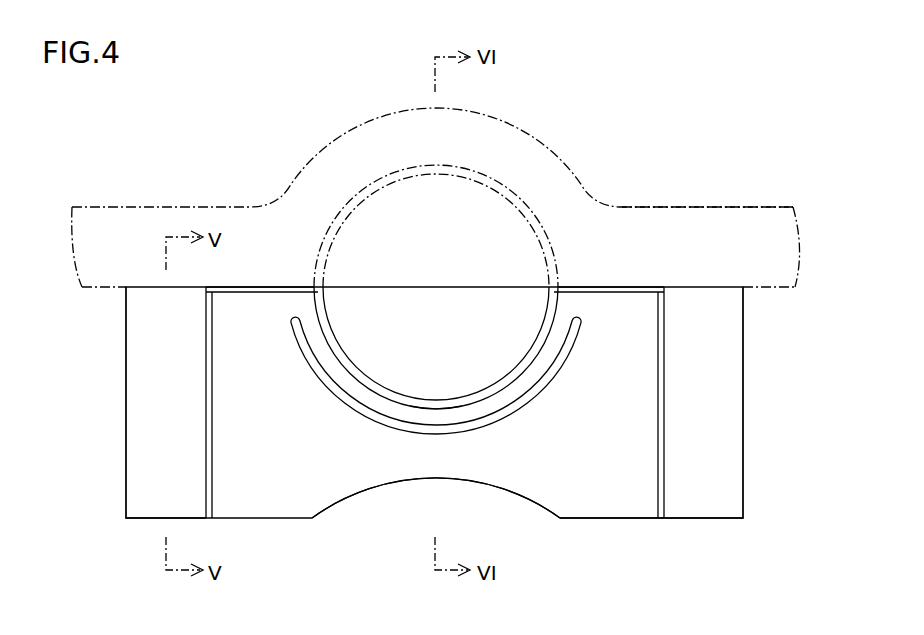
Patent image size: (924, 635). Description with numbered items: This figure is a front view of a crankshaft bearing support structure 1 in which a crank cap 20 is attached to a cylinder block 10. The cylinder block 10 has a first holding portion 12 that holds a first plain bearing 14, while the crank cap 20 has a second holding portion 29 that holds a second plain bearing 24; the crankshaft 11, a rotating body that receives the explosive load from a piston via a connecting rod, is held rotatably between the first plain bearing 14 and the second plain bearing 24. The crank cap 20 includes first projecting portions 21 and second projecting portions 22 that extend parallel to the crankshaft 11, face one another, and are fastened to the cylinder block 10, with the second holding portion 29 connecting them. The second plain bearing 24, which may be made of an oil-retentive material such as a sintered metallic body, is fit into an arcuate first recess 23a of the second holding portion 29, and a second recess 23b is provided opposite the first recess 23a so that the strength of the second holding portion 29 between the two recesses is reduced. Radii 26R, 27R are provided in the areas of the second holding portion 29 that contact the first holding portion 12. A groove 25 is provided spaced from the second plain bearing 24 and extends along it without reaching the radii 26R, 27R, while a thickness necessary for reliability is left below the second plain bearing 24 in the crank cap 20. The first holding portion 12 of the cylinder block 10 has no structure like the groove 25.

The crankshaft bearing support structure 1 is at (118, 156).
The cylinder block 10 is at (585, 104).
The crankshaft 11 is at (498, 228).
The first holding portion 12 is at (695, 233).
The first plain bearing 14 is at (387, 173).
The crank cap 20 is at (660, 542).
The first projecting portions 21 is at (720, 441).
The second projecting portions 22 is at (142, 437).
The first recess 23a is at (456, 392).
The second recess 23b is at (423, 480).
The second plain bearing 24 is at (343, 347).
The groove 25 is at (358, 410).
The radius 26R is at (613, 288).
The radius 27R is at (244, 288).
The second holding portion 29 is at (601, 495).